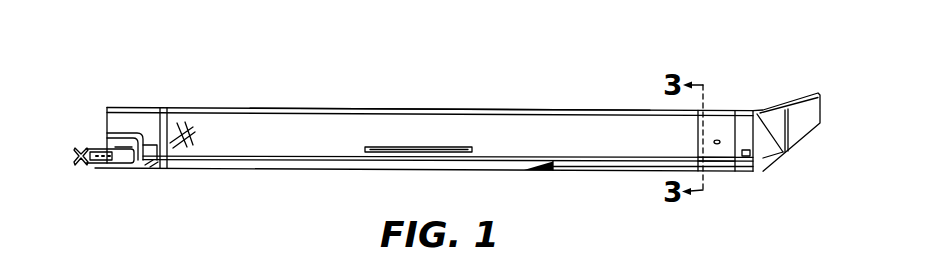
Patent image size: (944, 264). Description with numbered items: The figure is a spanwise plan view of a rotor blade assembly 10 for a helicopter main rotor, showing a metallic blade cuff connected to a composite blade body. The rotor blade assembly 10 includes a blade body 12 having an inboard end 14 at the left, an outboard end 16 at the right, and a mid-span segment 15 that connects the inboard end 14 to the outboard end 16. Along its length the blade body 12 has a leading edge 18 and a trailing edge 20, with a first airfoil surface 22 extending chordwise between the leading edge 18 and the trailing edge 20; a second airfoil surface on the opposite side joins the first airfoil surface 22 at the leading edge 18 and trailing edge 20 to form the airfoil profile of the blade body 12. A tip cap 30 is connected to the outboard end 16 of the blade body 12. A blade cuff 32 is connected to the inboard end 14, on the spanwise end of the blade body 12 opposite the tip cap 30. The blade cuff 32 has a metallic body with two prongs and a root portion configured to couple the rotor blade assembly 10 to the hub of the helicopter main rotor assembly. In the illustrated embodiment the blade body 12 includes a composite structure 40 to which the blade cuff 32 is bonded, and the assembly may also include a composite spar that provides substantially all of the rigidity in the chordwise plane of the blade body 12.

The rotor blade assembly 10 is at (328, 87).
The blade body 12 is at (452, 99).
The inboard end 14 is at (183, 100).
The mid-span segment 15 is at (508, 133).
The outboard end 16 is at (646, 101).
The leading edge 18 is at (563, 172).
The trailing edge 20 is at (556, 106).
The first airfoil surface 22 is at (255, 135).
The tip cap 30 is at (822, 95).
The blade cuff 32 is at (85, 150).
The composite structure 40 is at (190, 130).